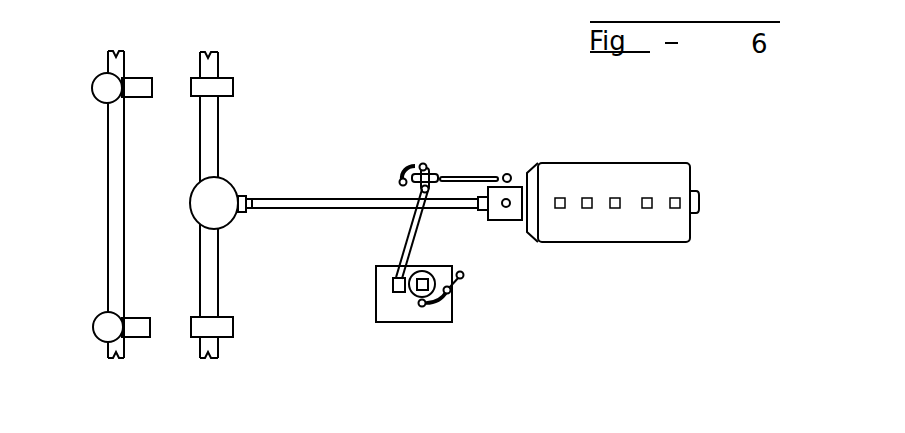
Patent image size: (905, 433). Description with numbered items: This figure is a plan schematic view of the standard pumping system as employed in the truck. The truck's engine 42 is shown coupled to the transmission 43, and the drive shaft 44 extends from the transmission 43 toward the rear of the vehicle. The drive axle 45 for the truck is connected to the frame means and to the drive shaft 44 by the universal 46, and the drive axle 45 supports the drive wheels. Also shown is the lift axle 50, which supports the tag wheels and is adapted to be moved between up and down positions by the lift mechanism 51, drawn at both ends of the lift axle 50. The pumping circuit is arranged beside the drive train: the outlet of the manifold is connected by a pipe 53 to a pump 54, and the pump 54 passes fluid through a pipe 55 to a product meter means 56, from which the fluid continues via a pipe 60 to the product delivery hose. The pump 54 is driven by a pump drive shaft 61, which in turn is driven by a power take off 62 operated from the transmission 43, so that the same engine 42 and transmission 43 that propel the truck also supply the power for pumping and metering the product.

The engine 42 is at (641, 242).
The transmission 43 is at (519, 186).
The drive shaft 44 is at (263, 210).
The drive axle 45 is at (210, 356).
The universal 46 is at (203, 198).
The lift axle 50 is at (118, 358).
The lift mechanism 51 is at (90, 103).
The pipe 53 is at (407, 165).
The pump 54 is at (423, 164).
The pipe 55 is at (413, 238).
The product meter means 56 is at (423, 306).
The pipe 60 is at (463, 280).
The pump drive shaft 61 is at (450, 176).
The power take off 62 is at (505, 173).